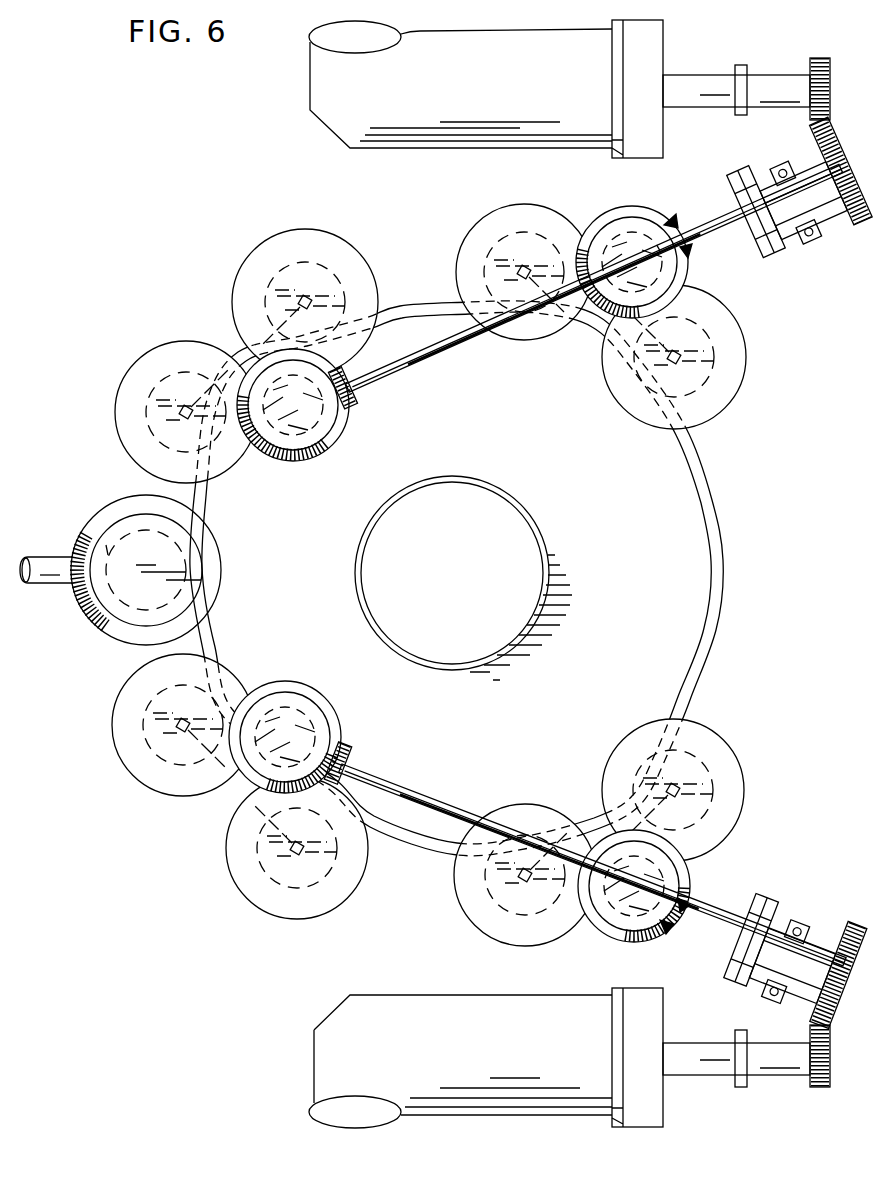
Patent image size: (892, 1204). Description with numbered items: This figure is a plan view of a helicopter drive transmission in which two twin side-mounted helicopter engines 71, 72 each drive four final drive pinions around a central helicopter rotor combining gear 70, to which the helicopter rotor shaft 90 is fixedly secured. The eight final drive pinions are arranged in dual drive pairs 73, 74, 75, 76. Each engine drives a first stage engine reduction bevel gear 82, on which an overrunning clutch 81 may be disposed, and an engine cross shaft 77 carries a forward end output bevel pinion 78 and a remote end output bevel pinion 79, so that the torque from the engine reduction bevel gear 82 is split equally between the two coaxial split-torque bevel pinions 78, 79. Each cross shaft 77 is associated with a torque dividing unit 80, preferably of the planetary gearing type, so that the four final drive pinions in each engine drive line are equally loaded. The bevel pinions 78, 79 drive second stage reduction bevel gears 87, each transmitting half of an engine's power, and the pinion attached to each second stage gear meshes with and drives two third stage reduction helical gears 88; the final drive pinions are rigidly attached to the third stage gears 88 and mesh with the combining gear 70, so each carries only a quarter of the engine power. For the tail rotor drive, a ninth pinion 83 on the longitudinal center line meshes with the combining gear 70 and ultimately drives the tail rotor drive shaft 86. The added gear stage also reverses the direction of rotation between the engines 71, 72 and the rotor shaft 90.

The combining gear 70 is at (634, 552).
The helicopter engine 71 is at (470, 52).
The helicopter engine 72 is at (490, 1105).
The dual drive pair 73 is at (786, 285).
The dual drive pair 74 is at (206, 328).
The dual drive pair 75 is at (196, 816).
The dual drive pair 76 is at (722, 858).
The engine cross shaft 77 is at (402, 338).
The forward end output bevel pinion 78 is at (682, 256).
The remote end output bevel pinion 79 is at (358, 390).
The torque dividing unit 80 is at (748, 159).
The overrunning clutch 81 is at (818, 222).
The engine reduction bevel gear 82 is at (862, 216).
The ninth pinion 83 is at (96, 536).
The tail rotor drive shaft 86 is at (24, 560).
The second stage reduction bevel gear 87 is at (618, 208).
The third stage reduction helical gear 88 is at (455, 256).
The helicopter rotor shaft 90 is at (535, 500).